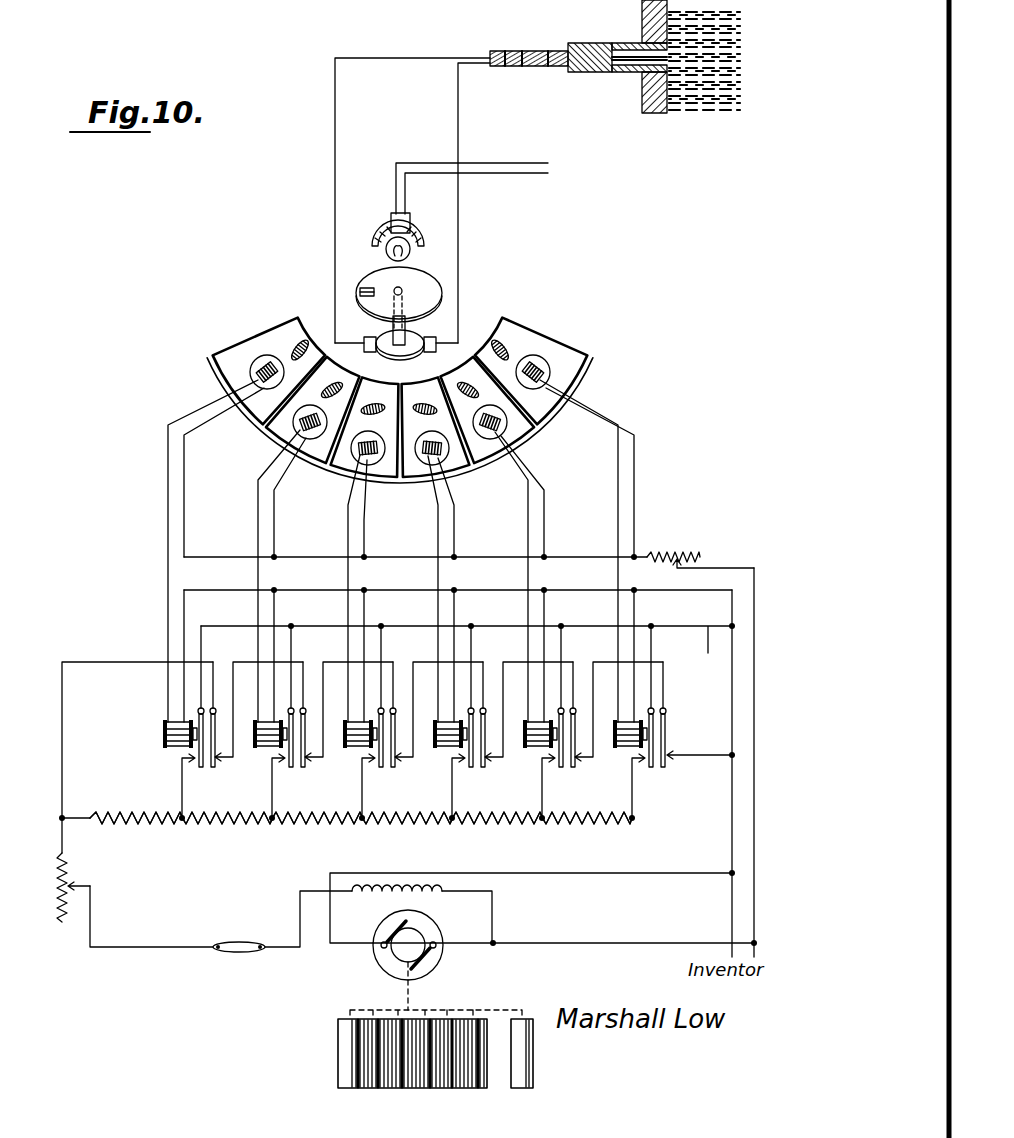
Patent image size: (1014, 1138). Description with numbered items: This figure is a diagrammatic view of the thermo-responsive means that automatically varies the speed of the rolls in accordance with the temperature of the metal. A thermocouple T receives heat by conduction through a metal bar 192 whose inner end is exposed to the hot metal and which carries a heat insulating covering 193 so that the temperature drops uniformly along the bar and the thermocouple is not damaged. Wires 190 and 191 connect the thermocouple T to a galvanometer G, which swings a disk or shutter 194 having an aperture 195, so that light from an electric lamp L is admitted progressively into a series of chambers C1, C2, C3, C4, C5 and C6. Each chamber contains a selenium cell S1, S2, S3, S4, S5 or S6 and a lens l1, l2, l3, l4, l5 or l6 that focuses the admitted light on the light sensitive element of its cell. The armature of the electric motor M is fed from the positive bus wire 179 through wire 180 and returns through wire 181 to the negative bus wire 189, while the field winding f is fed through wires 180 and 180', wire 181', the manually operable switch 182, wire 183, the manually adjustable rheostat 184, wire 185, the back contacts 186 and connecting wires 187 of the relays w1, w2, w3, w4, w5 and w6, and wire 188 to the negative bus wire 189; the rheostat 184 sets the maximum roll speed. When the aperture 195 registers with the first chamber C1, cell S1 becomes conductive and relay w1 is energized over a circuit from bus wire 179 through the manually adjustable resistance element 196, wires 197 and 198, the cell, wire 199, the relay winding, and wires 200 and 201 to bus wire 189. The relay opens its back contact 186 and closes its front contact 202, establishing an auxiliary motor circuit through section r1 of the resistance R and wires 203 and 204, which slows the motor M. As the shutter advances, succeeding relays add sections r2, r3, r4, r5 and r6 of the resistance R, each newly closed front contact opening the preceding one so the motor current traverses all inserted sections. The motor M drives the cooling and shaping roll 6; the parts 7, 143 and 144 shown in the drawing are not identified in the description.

The wire 190 is at (413, 58).
The wire 191 is at (458, 118).
The metal bar 192 is at (632, 70).
The heat insulating covering 193 is at (582, 70).
The thermocouple T is at (630, 38).
The electric lamp L is at (418, 253).
The disk or shutter 194 is at (425, 290).
The aperture 195 is at (372, 292).
The galvanometer G is at (396, 354).
The chamber C1 is at (228, 358).
The chamber C2 is at (285, 423).
The chamber C3 is at (332, 462).
The chamber C4 is at (410, 478).
The chamber C5 is at (486, 452).
The chamber C6 is at (531, 371).
The selenium cell S1 is at (262, 380).
The selenium cell S2 is at (308, 432).
The selenium cell S3 is at (368, 462).
The selenium cell S4 is at (440, 462).
The selenium cell S5 is at (500, 432).
The selenium cell S6 is at (548, 369).
The lens l1 is at (290, 349).
The lens l2 is at (321, 392).
The lens l3 is at (370, 414).
The lens l4 is at (424, 415).
The lens l5 is at (468, 396).
The lens l6 is at (506, 358).
The wire 198 is at (184, 527).
The wire 199 is at (168, 537).
The wire 197 is at (406, 560).
The manually adjustable resistance element 196 is at (700, 557).
The positive bus wire 179 is at (754, 797).
The wire 201 is at (187, 590).
The wire 200 is at (197, 610).
The wire 204 is at (240, 627).
The wire 203 is at (201, 654).
The connecting wire 187 is at (303, 666).
The wire 185 is at (62, 733).
The relay w1 is at (170, 743).
The relay w2 is at (261, 743).
The relay w3 is at (351, 743).
The relay w4 is at (441, 743).
The relay w5 is at (531, 743).
The relay w6 is at (621, 743).
The back contact 186 is at (217, 764).
The wire 188 is at (700, 755).
The front contact 202 is at (190, 768).
The resistance R is at (347, 834).
The resistance section r1 is at (141, 822).
The resistance section r2 is at (231, 822).
The resistance section r3 is at (328, 822).
The resistance section r4 is at (431, 822).
The resistance section r5 is at (515, 822).
The resistance section r6 is at (600, 822).
The manually adjustable rheostat 184 is at (58, 882).
The wire 183 is at (135, 947).
The manually operable switch 182 is at (232, 945).
The wire 181' is at (300, 910).
The wire 181 is at (532, 923).
The field winding f is at (378, 896).
The wire 180' is at (496, 917).
The electric motor M is at (433, 931).
The wire 180 is at (565, 927).
The negative bus wire 189 is at (732, 838).
The brushes 143 is at (343, 1035).
The commutator segments 144 is at (423, 1085).
The cooling and shaping roll 6 is at (470, 1087).
The collector ring 7 is at (528, 1057).